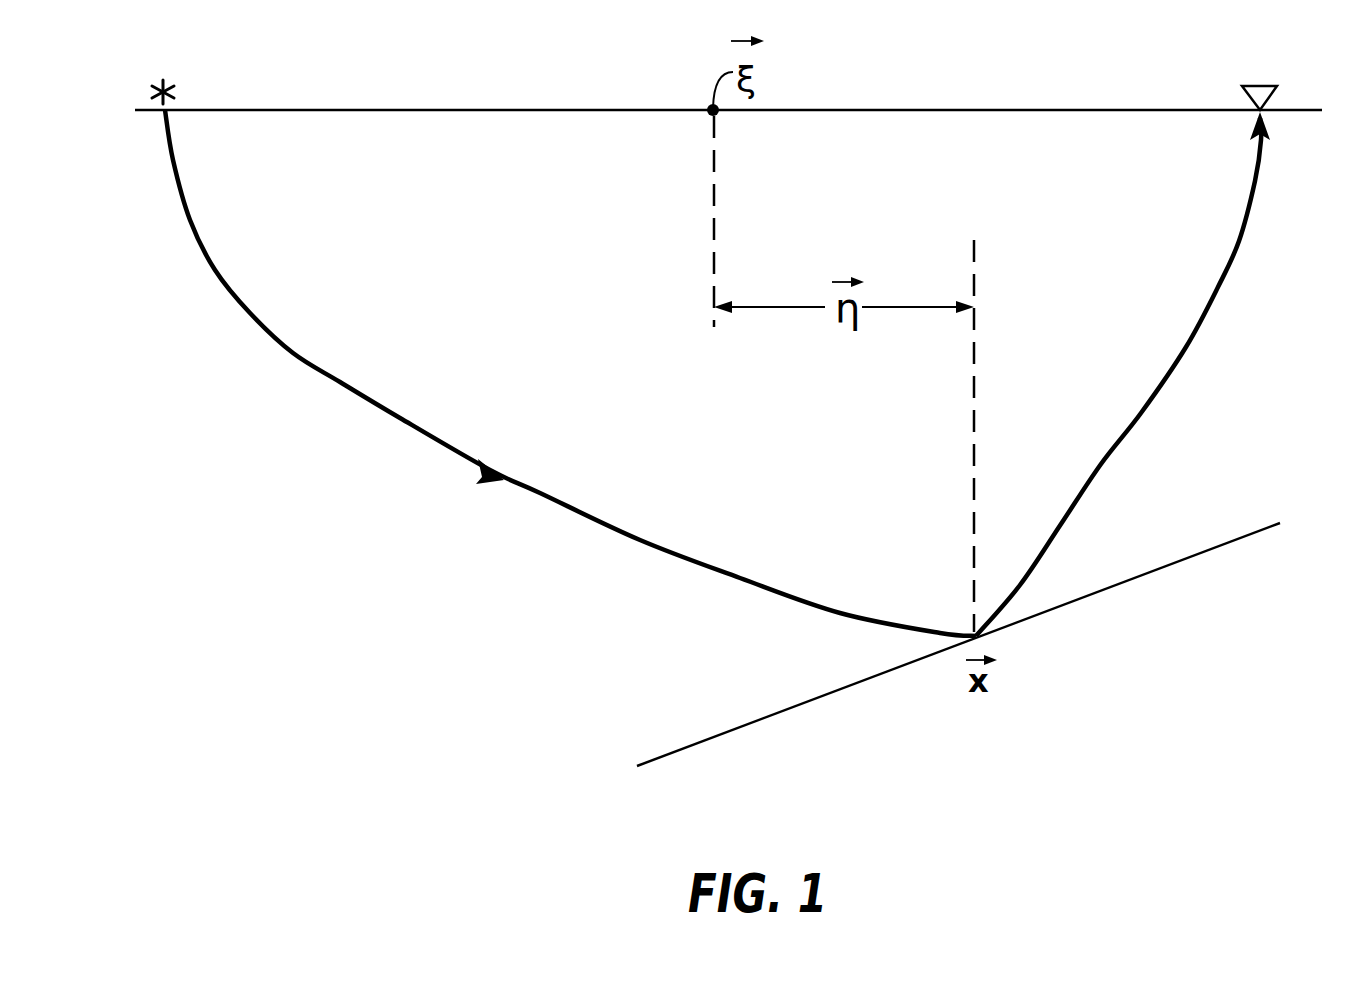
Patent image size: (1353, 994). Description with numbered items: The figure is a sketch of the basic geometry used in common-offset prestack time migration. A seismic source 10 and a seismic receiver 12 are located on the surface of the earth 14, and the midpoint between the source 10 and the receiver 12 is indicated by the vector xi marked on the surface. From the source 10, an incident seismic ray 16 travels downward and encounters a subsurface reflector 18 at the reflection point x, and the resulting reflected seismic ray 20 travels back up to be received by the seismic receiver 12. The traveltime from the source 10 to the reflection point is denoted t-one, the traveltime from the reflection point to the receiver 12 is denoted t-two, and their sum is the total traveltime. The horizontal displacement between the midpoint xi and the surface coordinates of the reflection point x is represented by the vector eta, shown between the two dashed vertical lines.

The seismic source 10 is at (167, 82).
The receiver 12 is at (1258, 85).
The surface 14 is at (425, 110).
The downgoing ray path 16 is at (362, 398).
The reflector 18 is at (748, 724).
The upgoing ray path 20 is at (1192, 352).